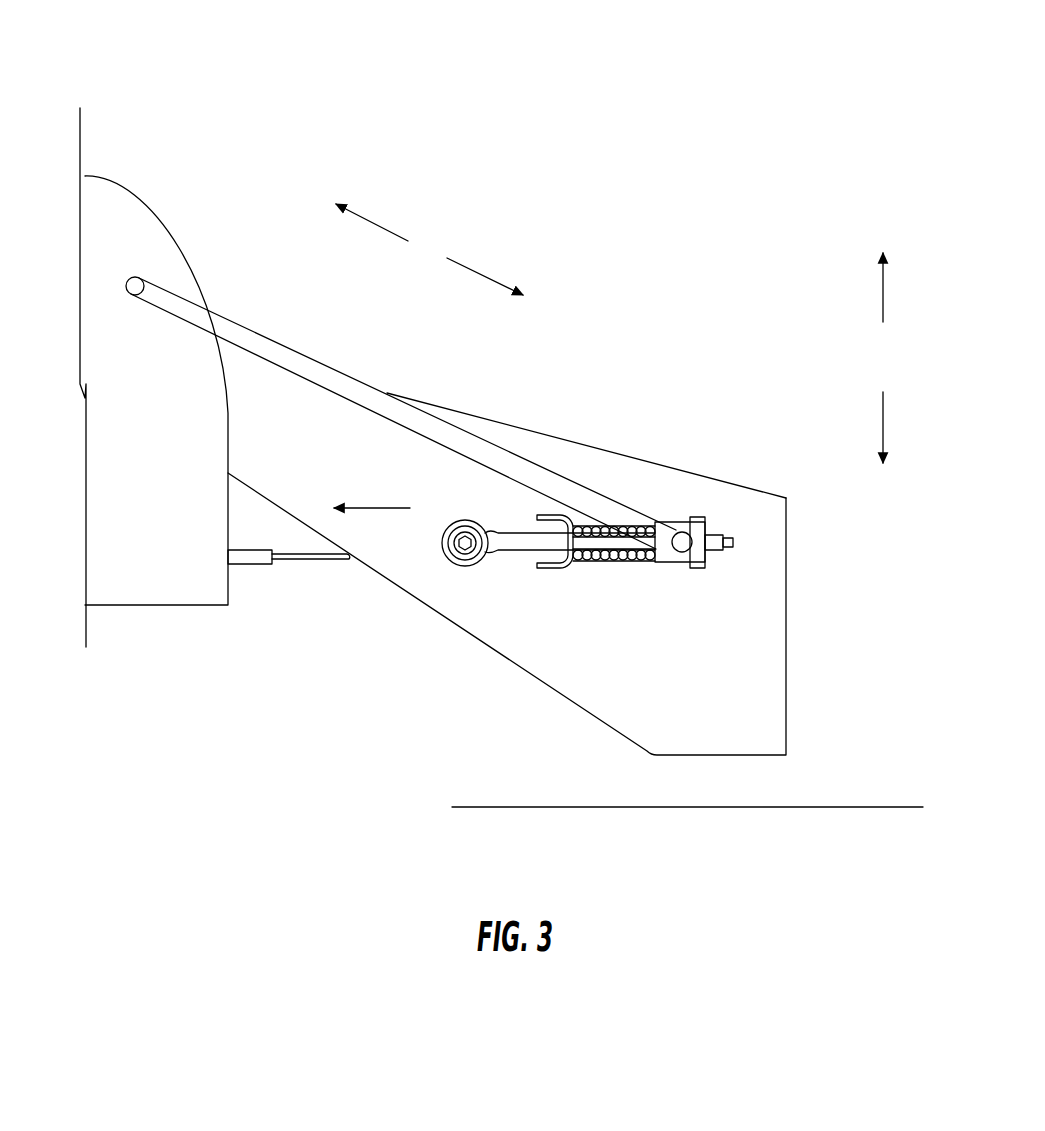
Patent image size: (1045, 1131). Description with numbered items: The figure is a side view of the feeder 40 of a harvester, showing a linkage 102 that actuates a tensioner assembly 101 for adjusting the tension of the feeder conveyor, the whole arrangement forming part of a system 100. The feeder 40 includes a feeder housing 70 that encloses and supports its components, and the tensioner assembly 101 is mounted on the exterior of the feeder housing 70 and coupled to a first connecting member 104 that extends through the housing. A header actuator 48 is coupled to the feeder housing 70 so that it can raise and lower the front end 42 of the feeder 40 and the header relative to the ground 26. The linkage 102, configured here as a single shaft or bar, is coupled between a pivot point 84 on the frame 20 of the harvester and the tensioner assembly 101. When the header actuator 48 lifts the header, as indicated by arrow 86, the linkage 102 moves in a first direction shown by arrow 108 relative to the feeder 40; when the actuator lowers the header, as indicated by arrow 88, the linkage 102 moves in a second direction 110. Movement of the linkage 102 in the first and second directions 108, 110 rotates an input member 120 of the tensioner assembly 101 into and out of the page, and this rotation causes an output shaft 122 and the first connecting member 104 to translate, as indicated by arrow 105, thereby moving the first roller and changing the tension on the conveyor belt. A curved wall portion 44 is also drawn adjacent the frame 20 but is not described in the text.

The frame 20 is at (105, 407).
The ground 26 is at (840, 807).
The feeder 40 is at (724, 48).
The front end 42 is at (786, 612).
The housing 44 is at (228, 415).
The header actuator 48 is at (300, 560).
The feeder housing 70 is at (601, 448).
The pivot point 84 is at (135, 277).
The arrow 86 is at (886, 291).
The arrow 88 is at (886, 426).
The system 100 is at (592, 389).
The tensioner assembly 101 is at (546, 580).
The linkage 102 is at (453, 435).
The first connecting member 104 is at (465, 545).
The arrow 105 is at (378, 505).
The arrow 108 is at (478, 272).
The second direction 110 is at (377, 222).
The input member 120 is at (673, 565).
The output shaft 122 is at (513, 533).